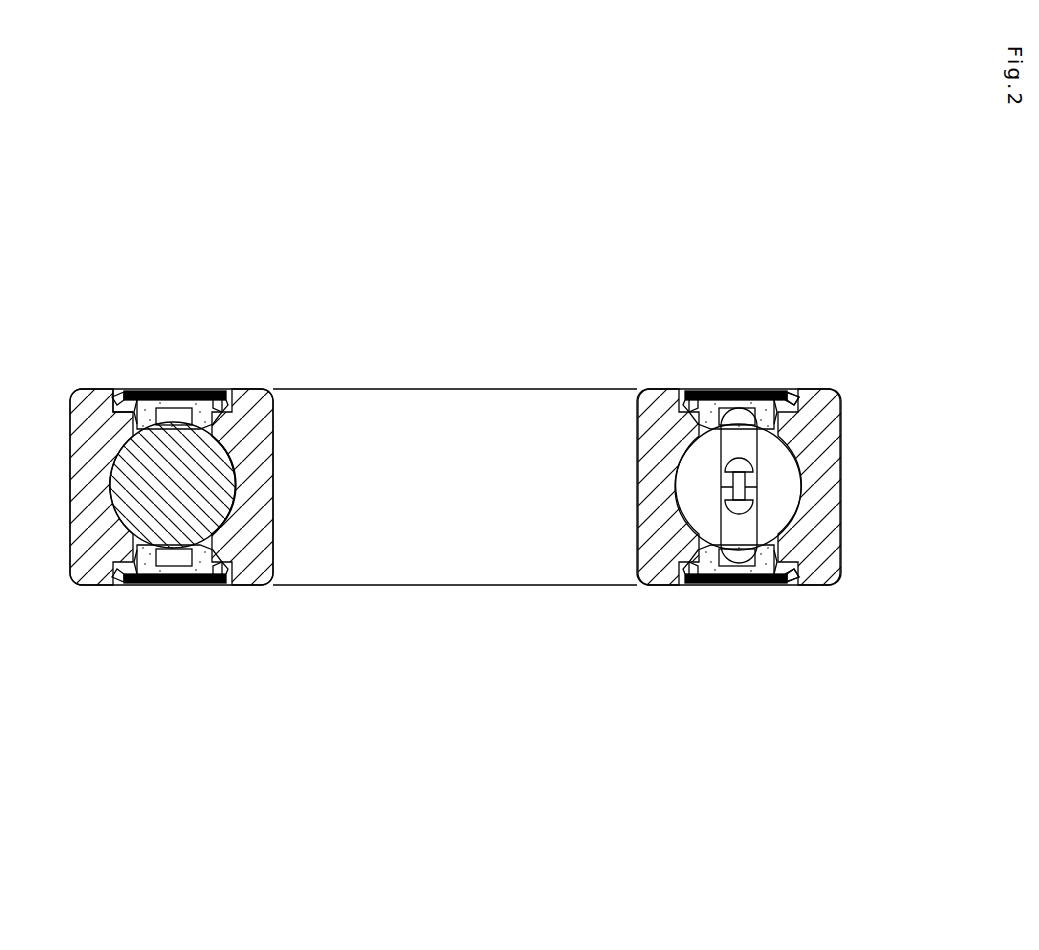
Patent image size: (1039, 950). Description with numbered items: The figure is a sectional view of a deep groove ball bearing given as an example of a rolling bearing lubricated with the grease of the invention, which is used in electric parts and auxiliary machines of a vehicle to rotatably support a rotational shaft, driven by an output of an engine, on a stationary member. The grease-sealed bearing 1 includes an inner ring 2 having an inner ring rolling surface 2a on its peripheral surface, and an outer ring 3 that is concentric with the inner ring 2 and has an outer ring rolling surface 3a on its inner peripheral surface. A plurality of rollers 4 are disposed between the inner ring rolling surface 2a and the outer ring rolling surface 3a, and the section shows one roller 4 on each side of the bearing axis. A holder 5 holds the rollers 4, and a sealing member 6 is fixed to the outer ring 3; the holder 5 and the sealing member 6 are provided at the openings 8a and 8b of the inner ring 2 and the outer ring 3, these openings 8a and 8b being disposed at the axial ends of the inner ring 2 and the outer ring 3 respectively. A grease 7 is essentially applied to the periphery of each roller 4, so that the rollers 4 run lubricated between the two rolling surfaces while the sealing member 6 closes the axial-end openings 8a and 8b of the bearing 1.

The grease-sealed bearing 1 is at (793, 602).
The inner ring 2 is at (661, 420).
The inner ring rolling surface 2a is at (268, 536).
The outer ring 3 is at (812, 417).
The outer ring rolling surface 3a is at (113, 399).
The roller 4 is at (156, 493).
The holder 5 is at (740, 418).
The sealing member 6 is at (200, 588).
The grease 7 is at (199, 396).
The opening 8a is at (767, 588).
The opening 8b is at (766, 407).